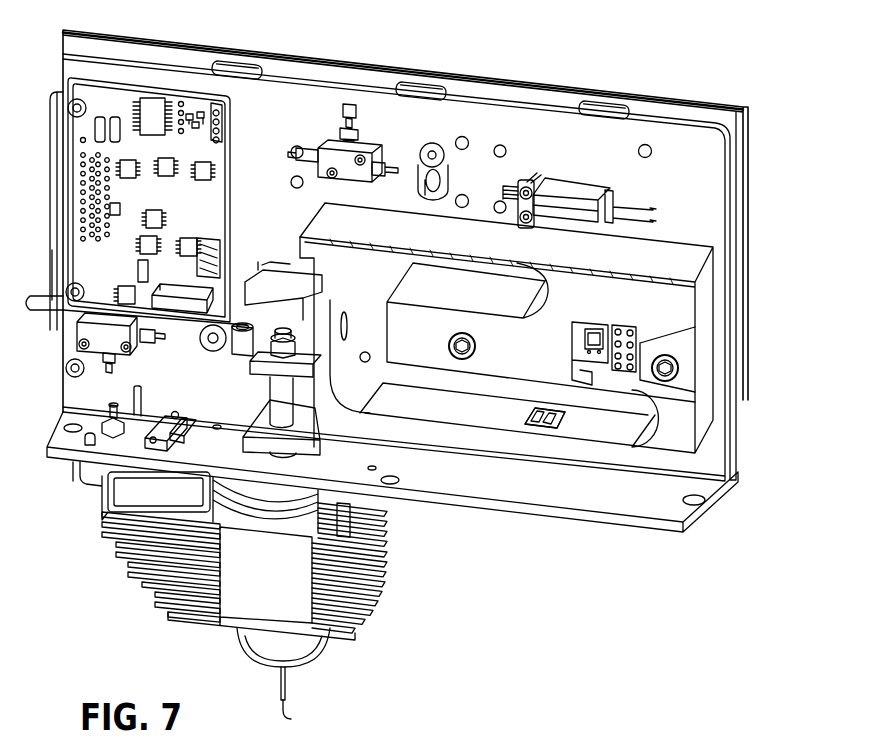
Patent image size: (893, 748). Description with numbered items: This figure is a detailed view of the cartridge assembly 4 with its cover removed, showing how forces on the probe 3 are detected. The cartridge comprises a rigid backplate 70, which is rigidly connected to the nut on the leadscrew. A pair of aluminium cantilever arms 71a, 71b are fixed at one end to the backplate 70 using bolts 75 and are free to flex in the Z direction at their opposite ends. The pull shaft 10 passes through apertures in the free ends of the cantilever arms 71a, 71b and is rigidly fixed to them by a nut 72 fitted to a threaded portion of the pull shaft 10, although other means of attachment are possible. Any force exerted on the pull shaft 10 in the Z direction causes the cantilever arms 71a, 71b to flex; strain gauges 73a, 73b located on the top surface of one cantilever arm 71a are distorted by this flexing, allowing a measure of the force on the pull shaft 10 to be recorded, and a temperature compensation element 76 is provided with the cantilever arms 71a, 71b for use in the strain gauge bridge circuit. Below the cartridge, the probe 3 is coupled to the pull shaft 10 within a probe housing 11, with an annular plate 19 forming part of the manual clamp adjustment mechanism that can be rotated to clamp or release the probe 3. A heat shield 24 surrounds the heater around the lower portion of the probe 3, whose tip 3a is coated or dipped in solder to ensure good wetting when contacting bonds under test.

The cartridge assembly 4 is at (644, 58).
The rigid backplate 70 is at (731, 197).
The cantilever arm 71a is at (479, 440).
The cantilever arm 71b is at (483, 236).
The nut 72 is at (250, 362).
The strain gauge 73a is at (539, 428).
The strain gauge 73b is at (545, 418).
The bolts 75 is at (474, 340).
The temperature compensation element 76 is at (596, 356).
The pull shaft 10 is at (296, 399).
The annular plate 19 is at (246, 498).
The probe housing 11 is at (134, 576).
The heat shield 24 is at (270, 652).
The probe 3 is at (287, 686).
The tip 3a is at (291, 719).